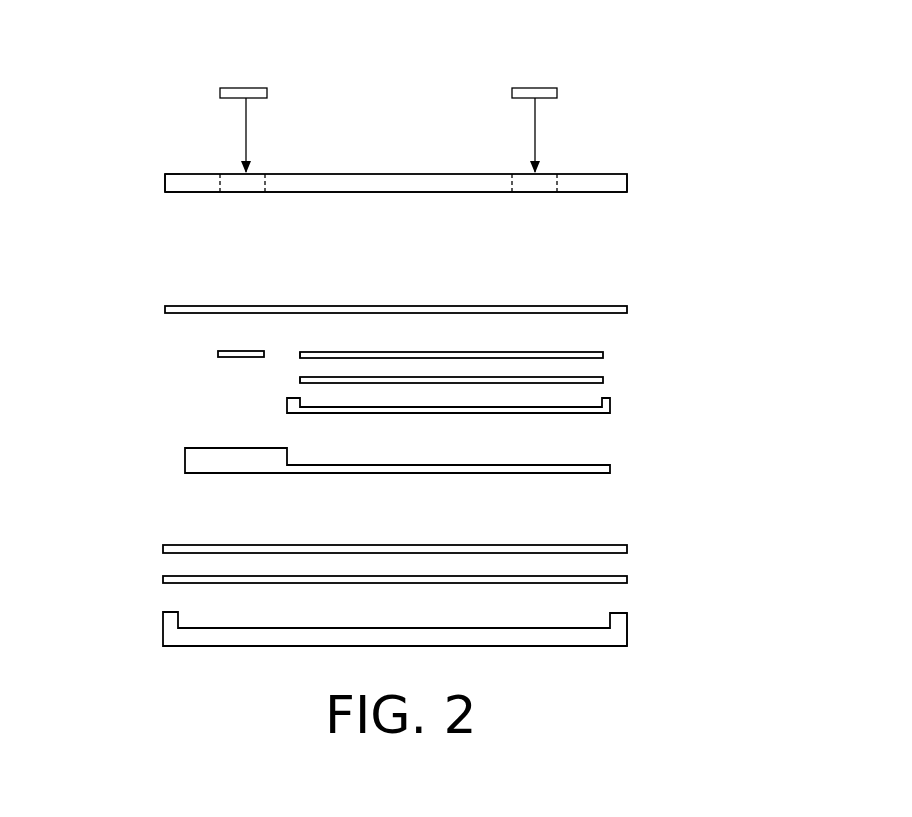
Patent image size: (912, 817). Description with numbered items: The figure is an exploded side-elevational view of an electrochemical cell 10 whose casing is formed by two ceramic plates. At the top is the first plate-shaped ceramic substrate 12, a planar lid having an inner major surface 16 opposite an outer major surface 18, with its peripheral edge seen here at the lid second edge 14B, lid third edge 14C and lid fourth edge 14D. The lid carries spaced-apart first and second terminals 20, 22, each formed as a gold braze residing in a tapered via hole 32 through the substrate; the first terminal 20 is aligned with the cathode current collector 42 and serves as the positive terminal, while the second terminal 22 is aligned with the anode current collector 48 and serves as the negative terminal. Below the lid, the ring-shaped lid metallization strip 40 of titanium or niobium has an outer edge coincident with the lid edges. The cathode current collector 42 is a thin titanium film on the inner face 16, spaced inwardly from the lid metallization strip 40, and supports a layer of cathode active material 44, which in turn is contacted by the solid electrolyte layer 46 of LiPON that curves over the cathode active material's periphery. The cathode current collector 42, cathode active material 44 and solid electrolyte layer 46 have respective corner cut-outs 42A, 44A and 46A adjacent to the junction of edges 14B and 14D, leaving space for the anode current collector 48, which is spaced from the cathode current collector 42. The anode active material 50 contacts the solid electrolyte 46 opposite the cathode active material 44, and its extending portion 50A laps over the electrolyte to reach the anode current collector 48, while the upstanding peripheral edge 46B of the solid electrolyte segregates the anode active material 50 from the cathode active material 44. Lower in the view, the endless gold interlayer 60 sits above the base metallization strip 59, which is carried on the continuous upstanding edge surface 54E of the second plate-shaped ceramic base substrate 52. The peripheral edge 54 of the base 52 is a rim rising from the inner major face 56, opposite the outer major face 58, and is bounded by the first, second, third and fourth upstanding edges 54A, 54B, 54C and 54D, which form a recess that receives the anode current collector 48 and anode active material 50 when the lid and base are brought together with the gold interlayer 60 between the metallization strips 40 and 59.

The electrochemical cell 10 is at (707, 108).
The first plate-shaped ceramic substrate 12 is at (640, 180).
The lid second edge 14B is at (437, 194).
The lid third edge 14C is at (627, 186).
The lid fourth edge 14D is at (165, 185).
The inner major surface 16 is at (170, 194).
The outer major surface 18 is at (170, 172).
The first terminal 20 is at (535, 88).
The second terminal 22 is at (240, 88).
The tapered via hole 32 is at (256, 180).
The lid metallization strip 40 is at (627, 310).
The cathode current collector 42 is at (603, 355).
The corner cut-out of cathode current collector 42A is at (291, 350).
The cathode active material 44 is at (603, 380).
The corner cut-out of cathode active material 44A is at (281, 376).
The solid electrolyte layer 46 is at (610, 410).
The corner cut-out of solid electrolyte layer 46A is at (282, 424).
The upstanding peripheral edge of solid electrolyte 46B is at (287, 405).
The anode current collector 48 is at (218, 353).
The anode active material 50 is at (610, 468).
The extending portion of anode active material 50A is at (185, 460).
The second plate-shaped ceramic base substrate 52 is at (735, 632).
The peripheral edge of base 54 is at (143, 635).
The first upstanding edge of base 54A is at (200, 640).
The second upstanding edge of base 54B is at (547, 648).
The third upstanding edge of base 54C is at (627, 622).
The fourth upstanding edge of base 54D is at (163, 620).
The continuous upstanding edge surface 54E is at (627, 614).
The inner major face of base 56 is at (385, 626).
The outer major face of base 58 is at (221, 668).
The base metallization strip 59 is at (627, 580).
The gold interlayer 60 is at (163, 549).